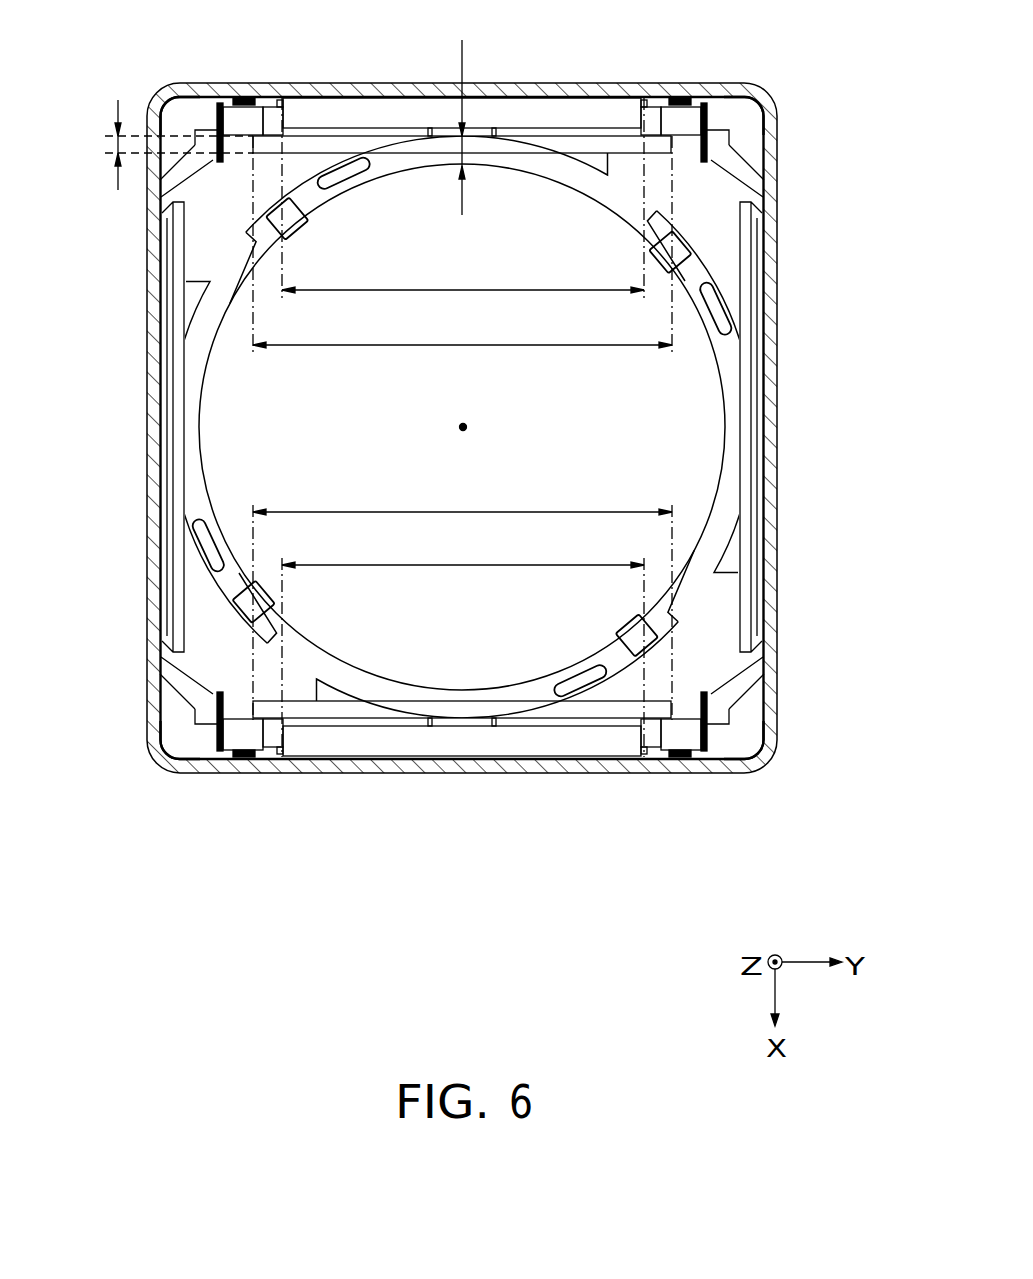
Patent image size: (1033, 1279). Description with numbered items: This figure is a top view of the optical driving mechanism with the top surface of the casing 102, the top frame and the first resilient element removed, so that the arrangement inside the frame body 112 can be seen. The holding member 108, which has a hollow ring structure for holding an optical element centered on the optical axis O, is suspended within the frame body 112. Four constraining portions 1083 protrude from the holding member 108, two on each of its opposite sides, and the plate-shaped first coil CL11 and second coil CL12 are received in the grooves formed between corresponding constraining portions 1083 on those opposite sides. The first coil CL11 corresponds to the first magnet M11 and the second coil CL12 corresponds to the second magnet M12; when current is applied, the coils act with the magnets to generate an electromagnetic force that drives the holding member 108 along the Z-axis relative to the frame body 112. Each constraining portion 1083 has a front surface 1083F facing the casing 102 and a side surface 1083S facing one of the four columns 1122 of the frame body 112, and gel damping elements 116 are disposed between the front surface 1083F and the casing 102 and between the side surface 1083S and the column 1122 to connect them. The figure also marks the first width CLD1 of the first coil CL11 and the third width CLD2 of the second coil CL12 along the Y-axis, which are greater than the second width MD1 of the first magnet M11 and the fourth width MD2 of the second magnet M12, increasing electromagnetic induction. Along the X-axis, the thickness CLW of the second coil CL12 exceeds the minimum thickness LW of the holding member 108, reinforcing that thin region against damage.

The casing 102 is at (330, 90).
The holding member 108 is at (205, 246).
The frame body 112 is at (750, 158).
The column 1122 is at (170, 108).
The damping element 116 is at (213, 120).
The constraining portion 1083 is at (244, 98).
The front surface 1083F is at (250, 760).
The side surface 1083S is at (180, 702).
The first magnet M11 is at (470, 748).
The second magnet M12 is at (388, 110).
The first coil CL11 is at (560, 712).
The second coil CL12 is at (562, 145).
The minimum thickness LW is at (489, 127).
The thickness CLW is at (79, 145).
The second width MD1 is at (463, 646).
The fourth width MD2 is at (463, 198).
The first width CLD1 is at (462, 600).
The third width CLD2 is at (462, 244).
The optical axis O is at (468, 427).